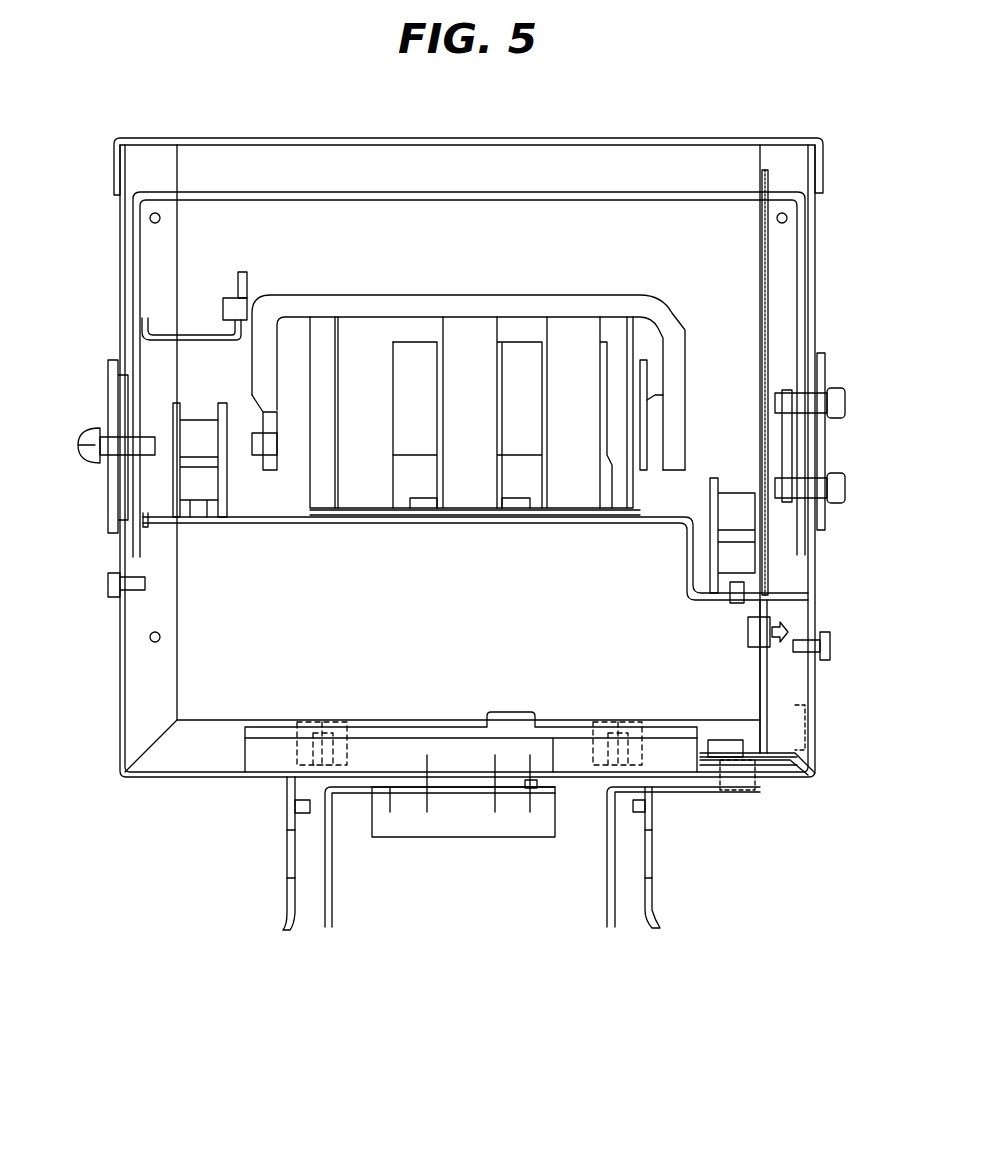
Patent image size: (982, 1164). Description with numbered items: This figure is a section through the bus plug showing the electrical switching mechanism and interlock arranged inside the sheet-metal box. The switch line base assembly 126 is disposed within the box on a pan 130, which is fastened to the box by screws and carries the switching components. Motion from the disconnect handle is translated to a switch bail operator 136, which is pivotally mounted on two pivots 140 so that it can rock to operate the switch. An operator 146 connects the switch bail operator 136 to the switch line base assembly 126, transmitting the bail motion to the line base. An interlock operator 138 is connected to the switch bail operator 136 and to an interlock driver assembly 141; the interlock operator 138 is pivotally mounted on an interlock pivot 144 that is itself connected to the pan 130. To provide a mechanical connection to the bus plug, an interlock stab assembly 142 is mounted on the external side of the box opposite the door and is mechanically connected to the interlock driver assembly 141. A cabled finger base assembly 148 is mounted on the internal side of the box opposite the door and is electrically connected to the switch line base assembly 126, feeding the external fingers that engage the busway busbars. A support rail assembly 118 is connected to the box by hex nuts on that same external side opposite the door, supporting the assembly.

The support rail assembly 118 is at (290, 930).
The switch line base assembly 126 is at (673, 312).
The pan 130 is at (190, 566).
The switch bail operator 136 is at (133, 260).
The interlock operator 138 is at (766, 243).
The pivot 140 is at (108, 410).
The interlock driver assembly 141 is at (797, 767).
The interlock stab assembly 142 is at (333, 923).
The interlock pivot 144 is at (760, 594).
The operator 146 is at (152, 340).
The cabled finger base assembly 148 is at (245, 740).